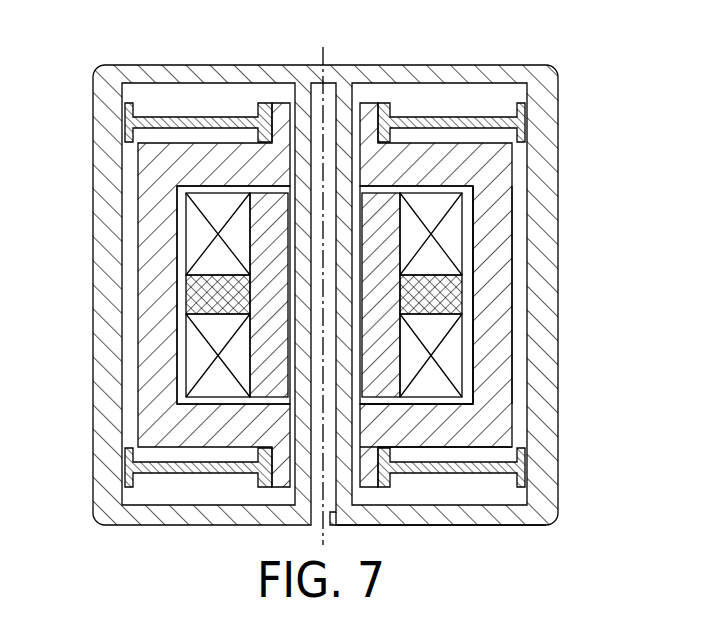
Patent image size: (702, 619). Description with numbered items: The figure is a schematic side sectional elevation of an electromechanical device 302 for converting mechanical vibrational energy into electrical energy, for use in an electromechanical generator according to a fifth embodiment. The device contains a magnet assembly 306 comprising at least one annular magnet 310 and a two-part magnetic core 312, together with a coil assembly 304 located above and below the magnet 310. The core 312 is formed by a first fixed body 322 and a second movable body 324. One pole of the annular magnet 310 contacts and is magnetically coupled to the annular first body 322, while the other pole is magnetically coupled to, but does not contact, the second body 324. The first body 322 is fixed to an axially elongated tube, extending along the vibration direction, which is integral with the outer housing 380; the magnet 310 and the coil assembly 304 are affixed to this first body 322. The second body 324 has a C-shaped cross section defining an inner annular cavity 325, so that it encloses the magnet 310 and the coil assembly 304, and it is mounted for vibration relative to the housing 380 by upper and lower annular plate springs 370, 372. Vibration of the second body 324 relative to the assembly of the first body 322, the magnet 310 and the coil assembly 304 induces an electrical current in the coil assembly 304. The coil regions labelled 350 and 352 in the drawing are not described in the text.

The electromechanical device 302 is at (565, 503).
The coil assembly 304 is at (452, 360).
The magnet assembly 306 is at (512, 150).
The annular magnet 310 is at (450, 289).
The two-part magnetic core 312 is at (498, 397).
The first fixed body 322 is at (395, 200).
The second movable body 324 is at (485, 433).
The inner annular cavity 325 is at (179, 338).
The first coil 350 is at (195, 213).
The second coil 352 is at (193, 370).
The upper annular plate spring 370 is at (487, 112).
The lower annular plate spring 372 is at (485, 477).
The outer housing 380 is at (529, 527).